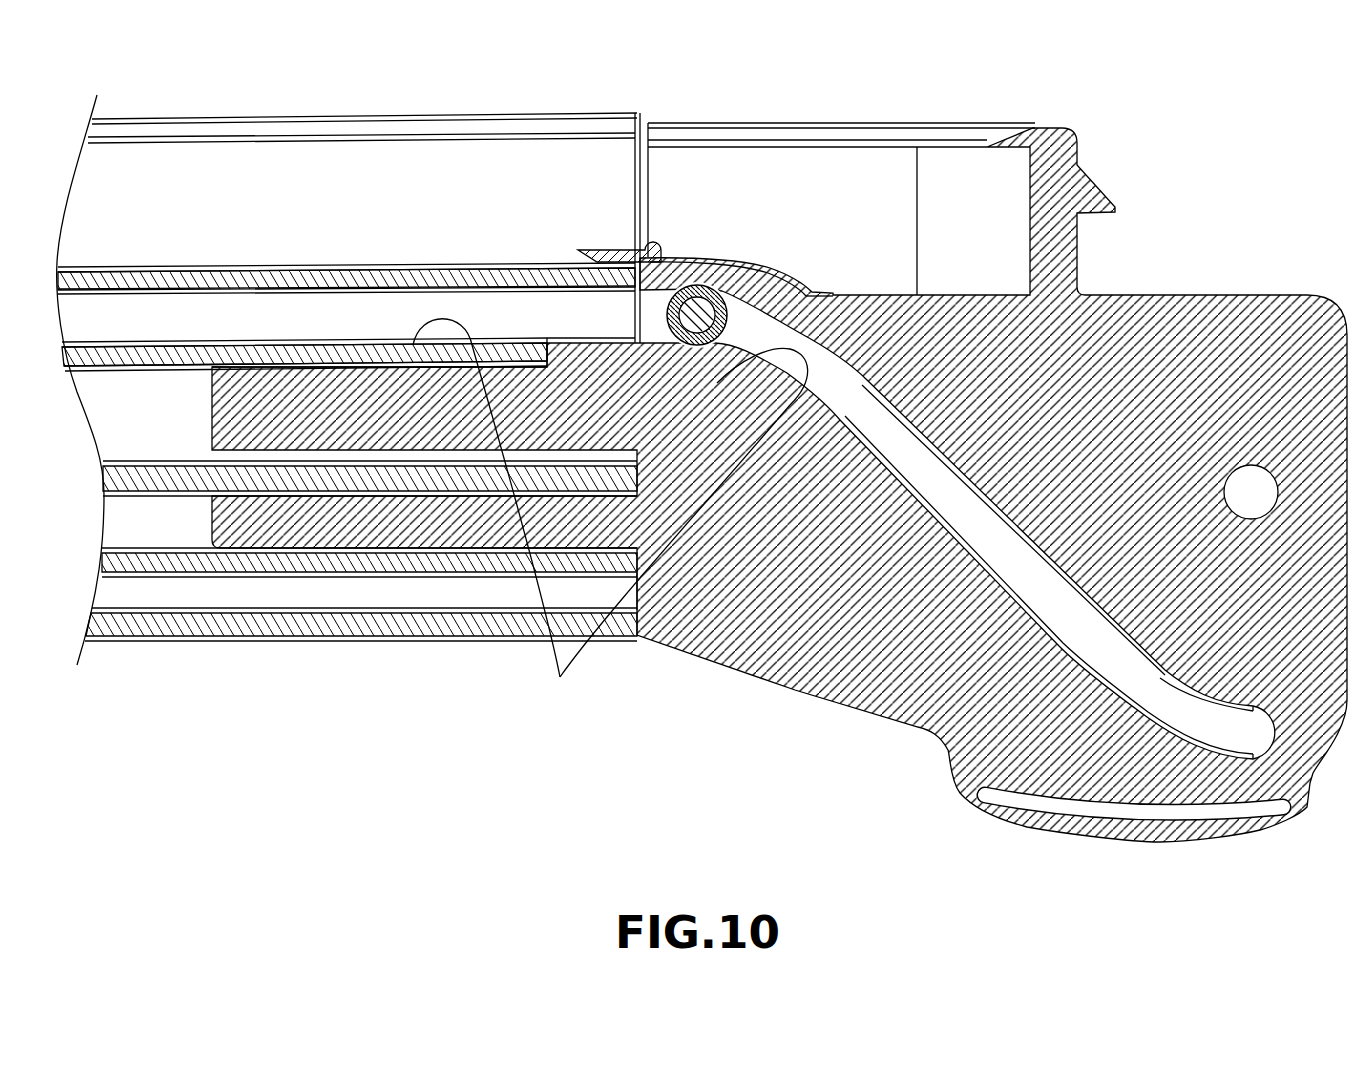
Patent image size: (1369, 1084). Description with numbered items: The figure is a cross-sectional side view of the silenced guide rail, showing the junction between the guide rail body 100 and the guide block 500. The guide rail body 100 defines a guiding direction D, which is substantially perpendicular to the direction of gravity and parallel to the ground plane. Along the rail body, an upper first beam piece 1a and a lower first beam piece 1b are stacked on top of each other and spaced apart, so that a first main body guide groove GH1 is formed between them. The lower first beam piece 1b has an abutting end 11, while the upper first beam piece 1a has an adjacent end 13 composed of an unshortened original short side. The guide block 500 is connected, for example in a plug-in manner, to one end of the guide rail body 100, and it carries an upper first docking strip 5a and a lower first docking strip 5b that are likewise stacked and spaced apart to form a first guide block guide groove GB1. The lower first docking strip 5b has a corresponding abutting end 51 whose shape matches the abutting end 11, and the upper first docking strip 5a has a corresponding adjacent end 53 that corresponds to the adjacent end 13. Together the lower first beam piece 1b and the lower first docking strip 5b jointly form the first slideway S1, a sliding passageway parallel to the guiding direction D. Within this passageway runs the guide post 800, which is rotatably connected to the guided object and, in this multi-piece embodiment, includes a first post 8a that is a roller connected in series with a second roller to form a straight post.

The guide rail body 100 is at (212, 650).
The first beam piece 1a is at (243, 277).
The first beam piece 1b is at (184, 355).
The first main body guide groove GH1 is at (310, 313).
The guiding direction D is at (445, 78).
The adjacent end 13 is at (619, 165).
The corresponding adjacent end 53 is at (612, 256).
The abutting end 11 is at (386, 262).
The corresponding abutting end 51 is at (523, 343).
The guide post 800 is at (726, 144).
The first post 8a is at (698, 312).
The first docking strip 5a is at (730, 272).
The first docking strip 5b is at (795, 296).
The first guide block guide groove GB1 is at (858, 388).
The guide block 500 is at (1221, 285).
The first slideway S1 is at (610, 515).